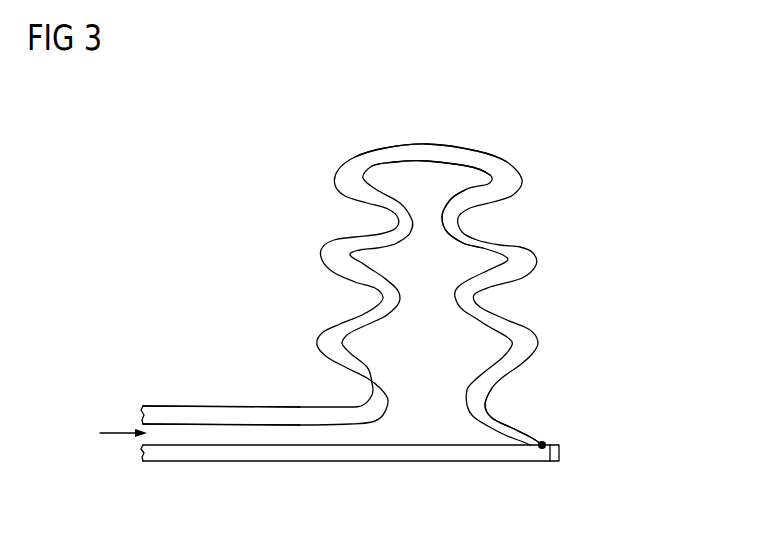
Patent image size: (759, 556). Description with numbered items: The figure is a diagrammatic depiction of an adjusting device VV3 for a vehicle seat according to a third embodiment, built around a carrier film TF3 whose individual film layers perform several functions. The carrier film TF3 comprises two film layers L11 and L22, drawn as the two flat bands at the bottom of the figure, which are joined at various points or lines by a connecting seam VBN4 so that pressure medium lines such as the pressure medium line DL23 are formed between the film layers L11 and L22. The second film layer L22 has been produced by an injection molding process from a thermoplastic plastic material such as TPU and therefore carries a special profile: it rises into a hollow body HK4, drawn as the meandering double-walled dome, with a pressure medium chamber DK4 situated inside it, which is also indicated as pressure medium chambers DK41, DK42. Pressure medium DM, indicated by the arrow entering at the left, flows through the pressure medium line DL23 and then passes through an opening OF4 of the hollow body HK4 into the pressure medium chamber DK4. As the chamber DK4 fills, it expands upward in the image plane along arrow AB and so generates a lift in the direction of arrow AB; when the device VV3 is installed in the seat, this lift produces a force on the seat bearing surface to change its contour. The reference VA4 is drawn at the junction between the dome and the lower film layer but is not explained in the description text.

The adjusting device VV3 is at (612, 109).
The hollow body HK4 is at (384, 157).
The arrow AB is at (427, 120).
The pressure medium chamber DK42 is at (437, 180).
The pressure medium chamber DK41 is at (447, 258).
The pressure medium chamber DK4 is at (413, 263).
The opening OF4 is at (423, 428).
The second film layer L22 is at (490, 420).
The valve connection VA4 is at (523, 437).
The carrier film TF3 is at (572, 456).
The pressure medium DM is at (118, 435).
The pressure medium line DL23 is at (235, 435).
The first film layer L11 is at (475, 452).
The connecting seam VBN4 is at (545, 450).